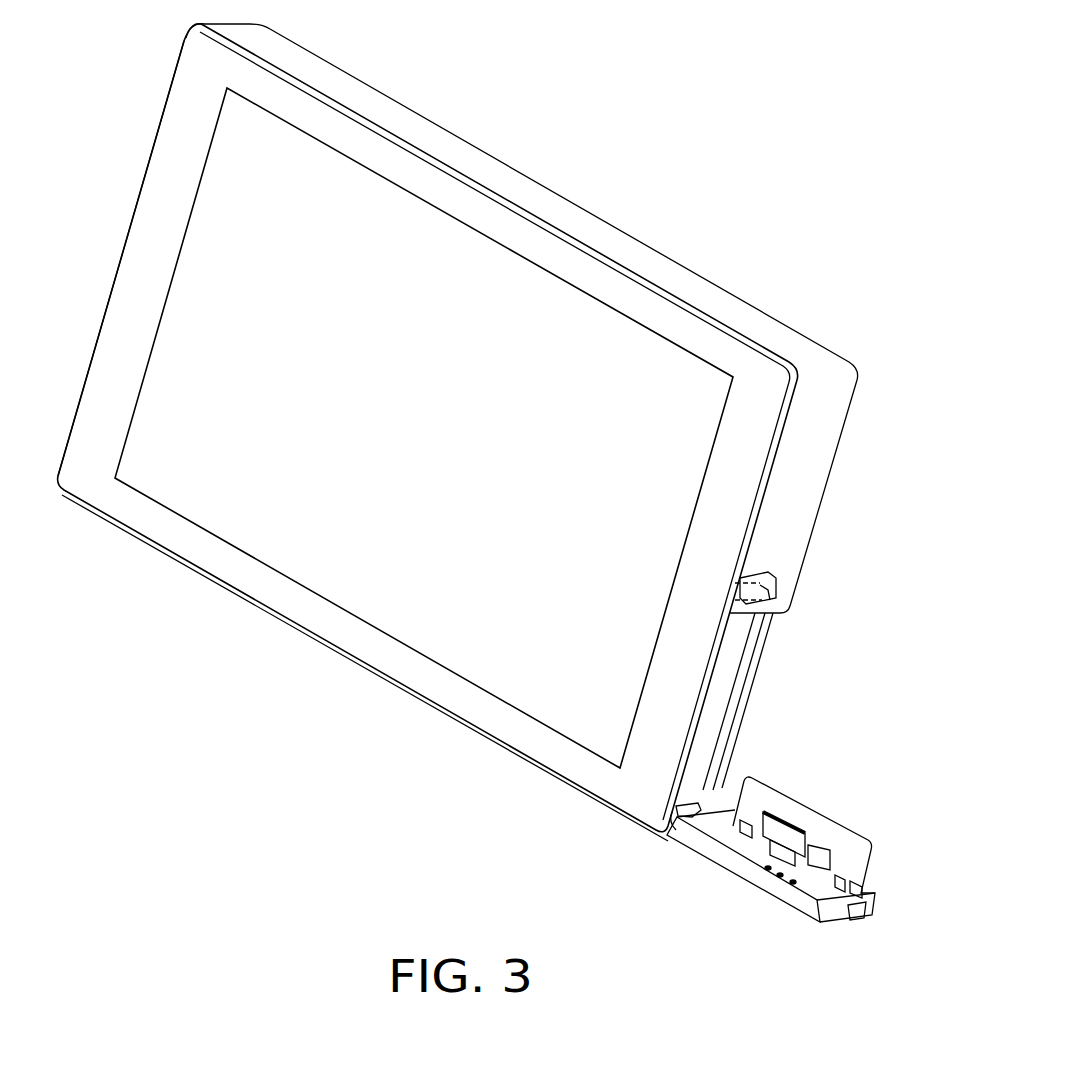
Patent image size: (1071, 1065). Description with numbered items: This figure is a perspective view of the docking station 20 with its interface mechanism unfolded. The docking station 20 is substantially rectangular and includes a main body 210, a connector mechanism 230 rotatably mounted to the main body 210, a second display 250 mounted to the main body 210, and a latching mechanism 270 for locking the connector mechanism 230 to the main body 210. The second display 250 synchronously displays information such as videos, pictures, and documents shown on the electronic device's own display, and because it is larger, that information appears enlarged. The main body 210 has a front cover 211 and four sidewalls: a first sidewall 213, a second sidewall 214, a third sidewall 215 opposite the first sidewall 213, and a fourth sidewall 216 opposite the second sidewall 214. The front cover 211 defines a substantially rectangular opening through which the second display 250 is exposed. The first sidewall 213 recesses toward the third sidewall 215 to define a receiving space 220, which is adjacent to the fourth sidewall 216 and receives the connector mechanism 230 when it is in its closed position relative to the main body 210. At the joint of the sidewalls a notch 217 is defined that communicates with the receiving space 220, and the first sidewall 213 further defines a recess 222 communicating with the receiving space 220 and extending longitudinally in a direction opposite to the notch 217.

The docking station 20 is at (570, 124).
The main body 210 is at (622, 293).
The front cover 211 is at (163, 208).
The first sidewall 213 is at (797, 505).
The second sidewall 214 is at (327, 78).
The third sidewall 215 is at (172, 85).
The fourth sidewall 216 is at (420, 705).
The notch 217 is at (685, 823).
The receiving space 220 is at (727, 680).
The recess 222 is at (778, 600).
The connector mechanism 230 is at (790, 892).
The second display 250 is at (375, 558).
The latching mechanism 270 is at (857, 920).